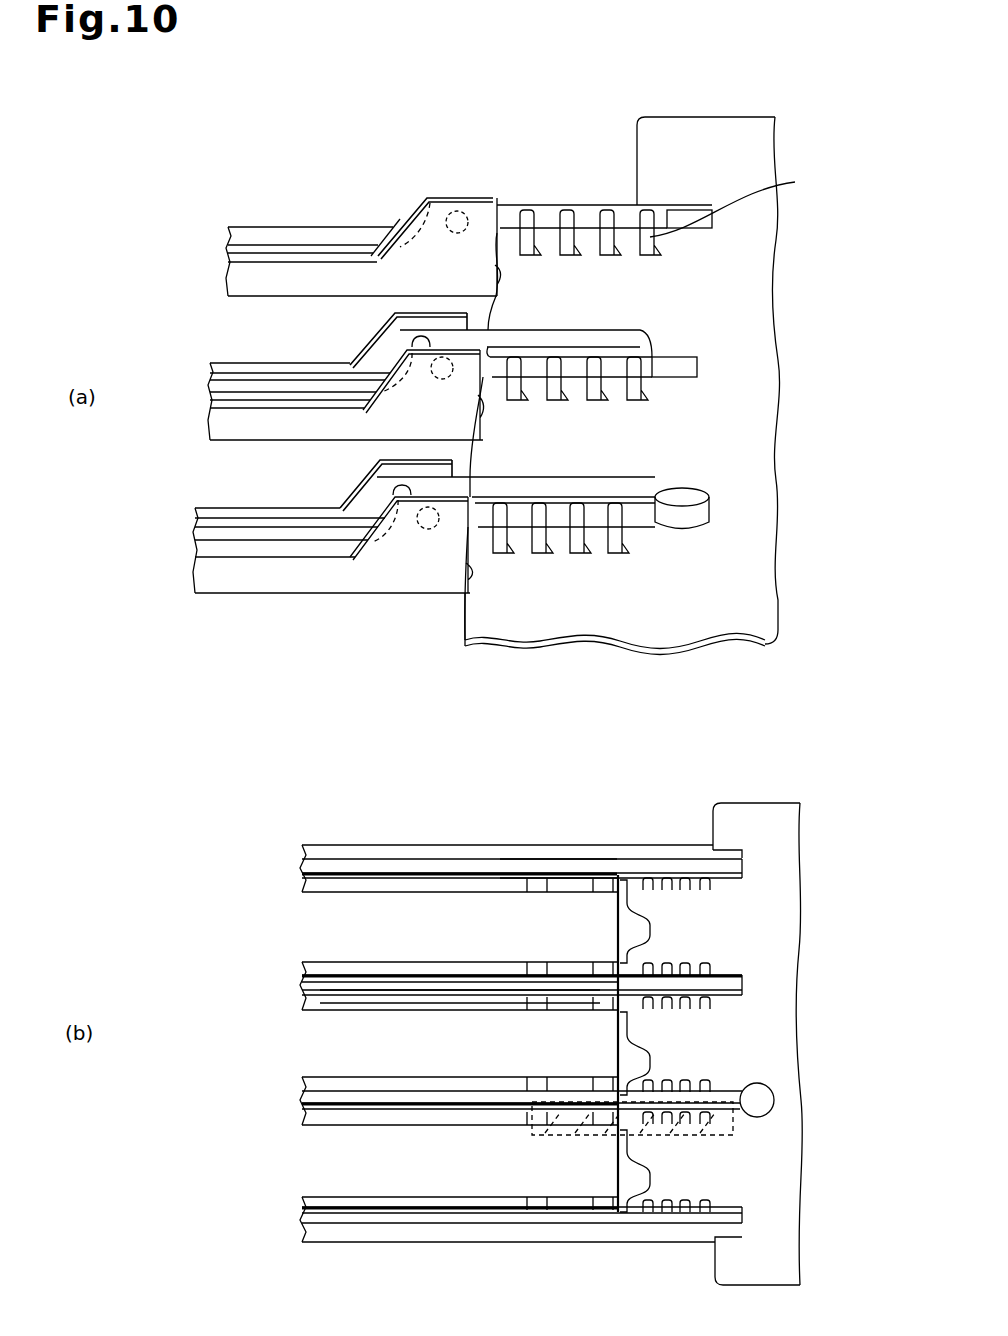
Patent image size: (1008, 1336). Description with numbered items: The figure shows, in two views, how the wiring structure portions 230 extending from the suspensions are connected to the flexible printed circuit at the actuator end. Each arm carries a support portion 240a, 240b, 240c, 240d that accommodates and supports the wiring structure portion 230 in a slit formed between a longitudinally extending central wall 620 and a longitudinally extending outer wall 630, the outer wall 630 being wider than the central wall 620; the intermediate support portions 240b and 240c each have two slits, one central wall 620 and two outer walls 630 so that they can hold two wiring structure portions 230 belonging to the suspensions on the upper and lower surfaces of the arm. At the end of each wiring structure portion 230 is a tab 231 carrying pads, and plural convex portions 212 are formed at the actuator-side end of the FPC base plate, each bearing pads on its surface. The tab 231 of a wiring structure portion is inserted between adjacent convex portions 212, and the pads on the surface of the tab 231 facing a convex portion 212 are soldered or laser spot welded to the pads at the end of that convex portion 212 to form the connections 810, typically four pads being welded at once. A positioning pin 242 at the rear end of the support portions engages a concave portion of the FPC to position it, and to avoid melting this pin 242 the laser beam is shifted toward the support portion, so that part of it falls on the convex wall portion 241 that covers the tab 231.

The convex portion 212 is at (700, 1042).
The wiring structure portion 230 is at (397, 877).
The tab 231 is at (550, 205).
The support portion 240a is at (310, 1200).
The support portion 240b is at (284, 540).
The support portion 240c is at (290, 385).
The support portion 240d is at (272, 250).
The convex wall portion 241 is at (563, 968).
The pin 242 is at (695, 495).
The central wall 620 is at (380, 987).
The outer wall 630 is at (443, 967).
The connection 810 is at (647, 383).